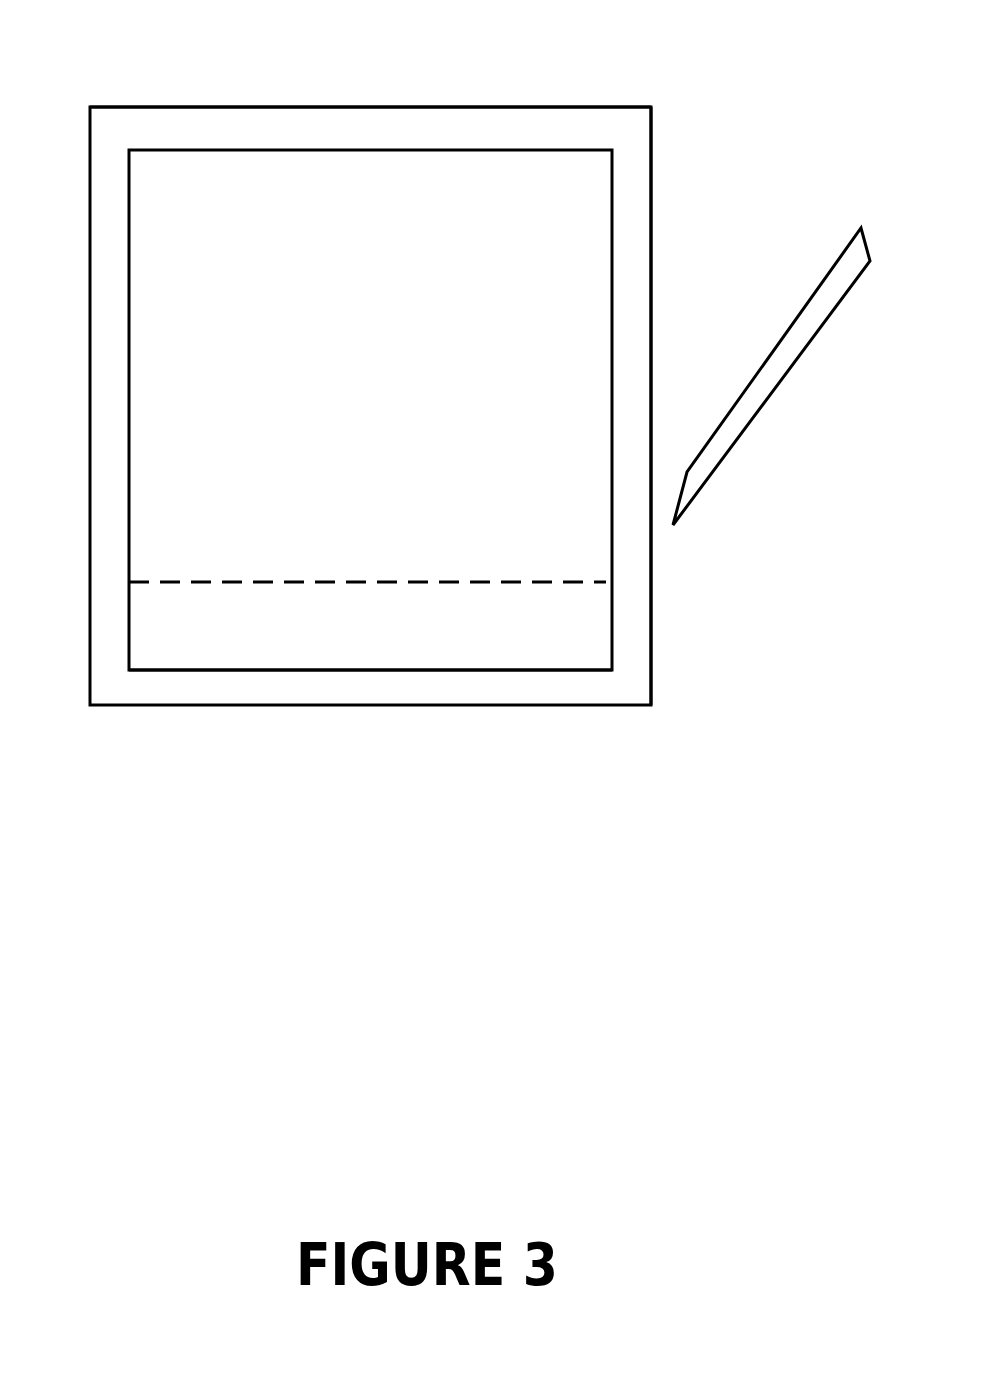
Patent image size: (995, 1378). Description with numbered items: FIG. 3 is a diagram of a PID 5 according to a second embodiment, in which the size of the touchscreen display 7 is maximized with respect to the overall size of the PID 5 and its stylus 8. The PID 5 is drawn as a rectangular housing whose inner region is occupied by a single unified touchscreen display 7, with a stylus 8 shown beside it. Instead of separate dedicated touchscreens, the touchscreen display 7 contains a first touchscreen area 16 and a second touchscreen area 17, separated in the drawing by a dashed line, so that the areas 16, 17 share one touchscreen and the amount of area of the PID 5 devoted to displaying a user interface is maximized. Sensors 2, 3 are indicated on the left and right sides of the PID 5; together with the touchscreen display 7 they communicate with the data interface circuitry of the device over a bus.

The sensor 2 is at (90, 403).
The sensor 3 is at (651, 405).
The PID 5 is at (264, 97).
The touchscreen display 7 is at (440, 140).
The stylus 8 is at (798, 283).
The first touchscreen area 16 is at (384, 564).
The second touchscreen area 17 is at (384, 653).